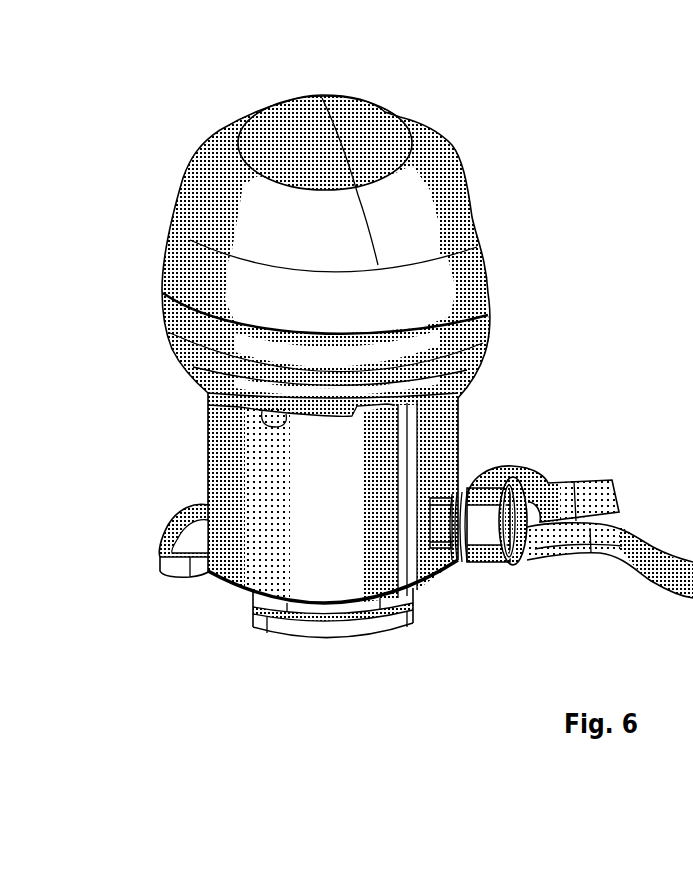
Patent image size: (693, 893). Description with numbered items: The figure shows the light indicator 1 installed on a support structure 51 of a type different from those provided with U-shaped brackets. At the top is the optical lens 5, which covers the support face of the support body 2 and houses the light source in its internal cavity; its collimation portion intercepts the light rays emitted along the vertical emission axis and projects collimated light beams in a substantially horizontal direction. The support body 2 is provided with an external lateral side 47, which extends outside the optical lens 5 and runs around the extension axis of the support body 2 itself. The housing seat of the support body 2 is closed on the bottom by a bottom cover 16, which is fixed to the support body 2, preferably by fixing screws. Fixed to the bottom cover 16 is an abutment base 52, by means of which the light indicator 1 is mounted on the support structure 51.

The light indicator 1 is at (495, 103).
The optical lens 5 is at (466, 155).
The support body 2 is at (486, 246).
The external lateral side 47 is at (430, 293).
The bottom cover 16 is at (200, 380).
The abutment base 52 is at (240, 453).
The support structure 51 is at (188, 604).